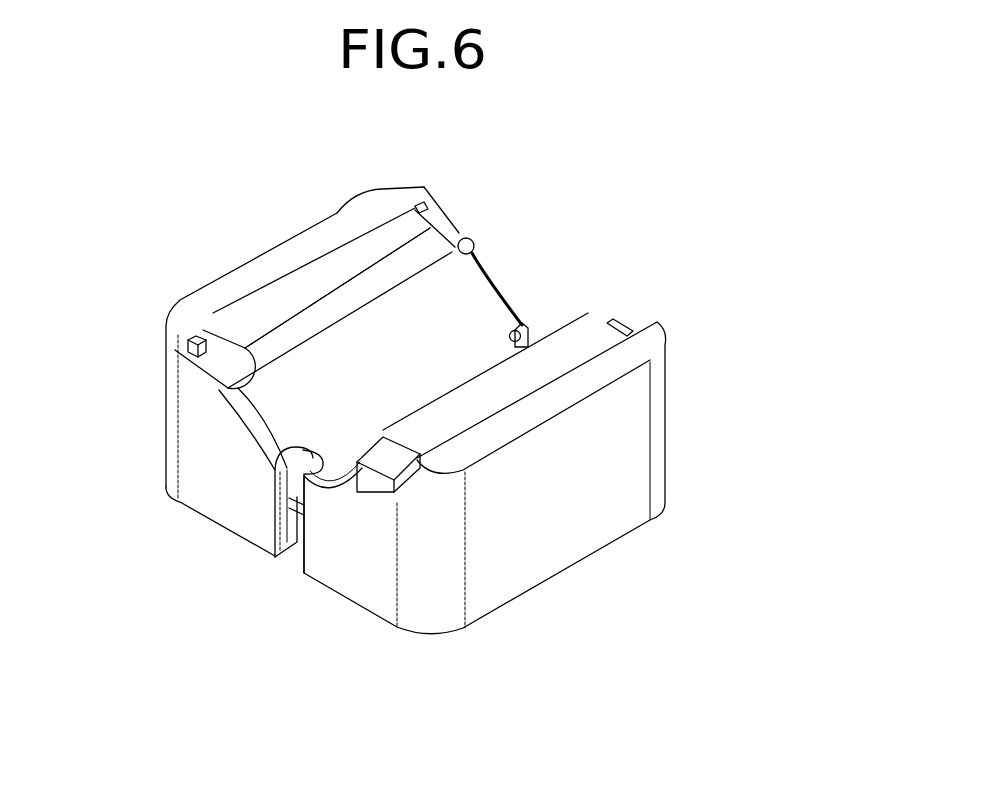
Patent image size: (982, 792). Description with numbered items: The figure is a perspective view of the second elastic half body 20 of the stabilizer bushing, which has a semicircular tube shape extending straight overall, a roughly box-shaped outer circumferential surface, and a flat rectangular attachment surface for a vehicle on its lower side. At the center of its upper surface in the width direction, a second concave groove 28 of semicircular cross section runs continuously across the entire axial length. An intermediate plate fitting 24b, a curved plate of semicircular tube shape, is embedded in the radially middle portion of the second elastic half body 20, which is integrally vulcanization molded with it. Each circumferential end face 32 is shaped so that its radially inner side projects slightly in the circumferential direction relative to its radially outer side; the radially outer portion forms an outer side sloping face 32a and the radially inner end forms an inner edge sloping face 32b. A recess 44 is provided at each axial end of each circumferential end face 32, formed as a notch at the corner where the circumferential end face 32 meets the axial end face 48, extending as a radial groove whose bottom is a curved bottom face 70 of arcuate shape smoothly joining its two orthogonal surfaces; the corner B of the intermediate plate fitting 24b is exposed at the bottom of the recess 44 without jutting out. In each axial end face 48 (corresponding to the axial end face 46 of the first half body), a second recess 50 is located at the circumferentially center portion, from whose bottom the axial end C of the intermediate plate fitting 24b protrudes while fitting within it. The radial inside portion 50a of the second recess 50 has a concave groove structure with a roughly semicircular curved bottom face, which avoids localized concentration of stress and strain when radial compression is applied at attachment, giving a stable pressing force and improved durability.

The second elastic half body 20 is at (569, 229).
The intermediate plate fitting 24b is at (425, 208).
The second concave groove 28 is at (483, 313).
The circumferential end face 32 is at (315, 273).
The outer side sloping face 32a is at (338, 215).
The inner edge sloping face 32b is at (363, 283).
The recess 44 is at (443, 224).
The axial end face 46 is at (474, 243).
The axial end face 48 is at (218, 497).
The second recess 50 is at (533, 331).
The radial inside portion 50a is at (512, 335).
The curved bottom face 70 is at (225, 362).
The corner B is at (205, 333).
The axial end C is at (298, 508).